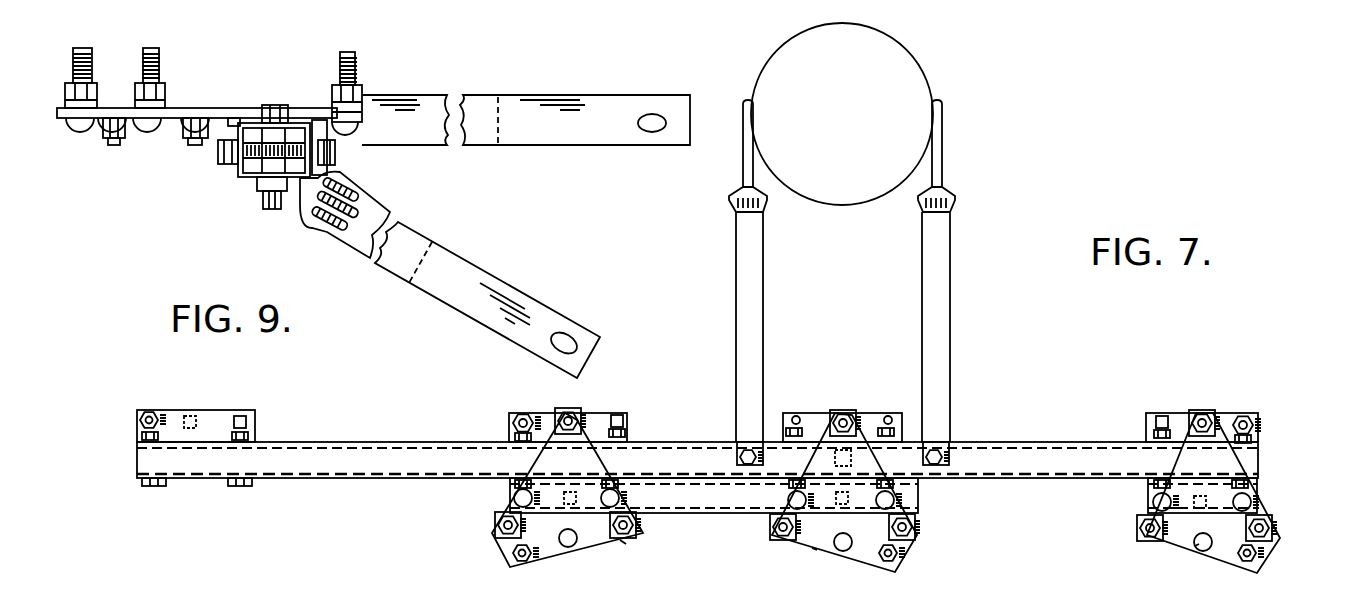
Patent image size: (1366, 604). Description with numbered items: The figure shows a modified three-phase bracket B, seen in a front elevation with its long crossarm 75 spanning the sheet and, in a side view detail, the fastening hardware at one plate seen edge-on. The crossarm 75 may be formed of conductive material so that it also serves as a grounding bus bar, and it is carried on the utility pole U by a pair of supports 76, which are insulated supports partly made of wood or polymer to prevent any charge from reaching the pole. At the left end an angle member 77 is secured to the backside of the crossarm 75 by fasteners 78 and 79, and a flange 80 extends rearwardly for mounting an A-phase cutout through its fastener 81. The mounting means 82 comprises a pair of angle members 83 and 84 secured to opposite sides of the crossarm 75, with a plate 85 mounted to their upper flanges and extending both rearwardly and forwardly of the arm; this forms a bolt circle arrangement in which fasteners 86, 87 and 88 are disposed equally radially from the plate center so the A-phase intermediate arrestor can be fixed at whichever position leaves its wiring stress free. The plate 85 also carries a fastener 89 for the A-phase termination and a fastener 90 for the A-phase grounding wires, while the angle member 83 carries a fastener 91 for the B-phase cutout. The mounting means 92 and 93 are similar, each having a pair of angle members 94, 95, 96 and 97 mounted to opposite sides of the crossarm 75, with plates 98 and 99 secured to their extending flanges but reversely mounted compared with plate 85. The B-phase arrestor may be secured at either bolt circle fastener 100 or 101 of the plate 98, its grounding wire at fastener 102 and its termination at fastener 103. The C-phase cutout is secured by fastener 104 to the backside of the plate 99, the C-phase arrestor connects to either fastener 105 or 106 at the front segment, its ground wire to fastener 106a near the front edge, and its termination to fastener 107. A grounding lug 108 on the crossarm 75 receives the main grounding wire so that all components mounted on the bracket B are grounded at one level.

In FIG. 7, the utility pole U is at (920, 56).
In FIG. 7, the bracket B is at (987, 381).
In FIG. 9, the crossarm 75 is at (245, 180).
In FIG. 7, the crossarm 75 is at (995, 452).
In FIG. 9, the supports 76 is at (510, 283).
In FIG. 7, the supports 76 is at (922, 272).
In FIG. 7, the angle member 77 is at (258, 422).
In FIG. 7, the fastener 78 is at (165, 486).
In FIG. 7, the fastener 79 is at (242, 486).
In FIG. 7, the flange 80 is at (190, 410).
In FIG. 7, the fastener 81 is at (137, 422).
In FIG. 7, the mounting means 82 is at (643, 438).
In FIG. 7, the angle member 83 is at (509, 421).
In FIG. 7, the angle member 84 is at (512, 490).
In FIG. 7, the plate 85 is at (620, 540).
In FIG. 7, the fastener 86 is at (497, 530).
In FIG. 7, the fastener 87 is at (645, 527).
In FIG. 7, the fastener 88 is at (568, 412).
In FIG. 7, the fastener 89 is at (512, 560).
In FIG. 7, the fastener 90 is at (570, 545).
In FIG. 7, the fastener 91 is at (530, 392).
In FIG. 7, the mounting means 92 is at (864, 403).
In FIG. 7, the mounting means 93 is at (1232, 403).
In FIG. 7, the angle member 94 is at (837, 412).
In FIG. 7, the angle member 95 is at (905, 500).
In FIG. 7, the angle member 96 is at (1257, 422).
In FIG. 9, the angle member 97 is at (232, 128).
In FIG. 7, the angle member 97 is at (1148, 492).
In FIG. 7, the plate 98 is at (812, 548).
In FIG. 9, the plate 99 is at (58, 112).
In FIG. 7, the plate 99 is at (1195, 546).
In FIG. 7, the fastener 100 is at (781, 538).
In FIG. 7, the fastener 101 is at (915, 535).
In FIG. 7, the fastener 102 is at (845, 550).
In FIG. 7, the fastener 103 is at (900, 560).
In FIG. 9, the fastener 104 is at (355, 95).
In FIG. 7, the fastener 104 is at (1208, 382).
In FIG. 7, the fastener 105 is at (1143, 532).
In FIG. 9, the fastener 106 is at (160, 82).
In FIG. 7, the fastener 106 is at (1272, 527).
In FIG. 9, the fastener 106a is at (105, 140).
In FIG. 7, the fastener 106a is at (1203, 548).
In FIG. 9, the fastener 107 is at (70, 92).
In FIG. 7, the fastener 107 is at (1262, 555).
In FIG. 7, the grounding lug 108 is at (830, 458).